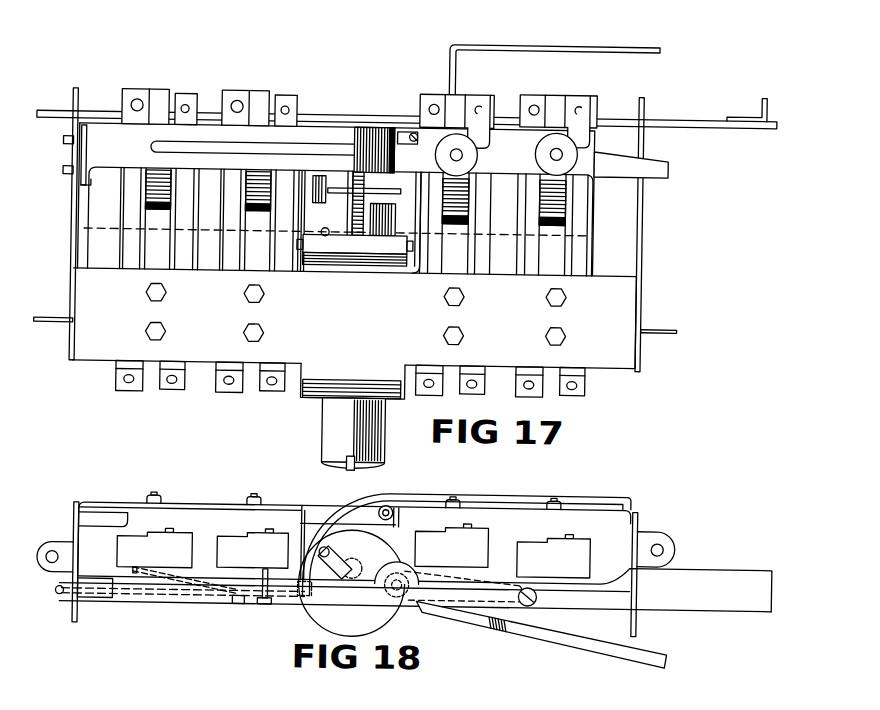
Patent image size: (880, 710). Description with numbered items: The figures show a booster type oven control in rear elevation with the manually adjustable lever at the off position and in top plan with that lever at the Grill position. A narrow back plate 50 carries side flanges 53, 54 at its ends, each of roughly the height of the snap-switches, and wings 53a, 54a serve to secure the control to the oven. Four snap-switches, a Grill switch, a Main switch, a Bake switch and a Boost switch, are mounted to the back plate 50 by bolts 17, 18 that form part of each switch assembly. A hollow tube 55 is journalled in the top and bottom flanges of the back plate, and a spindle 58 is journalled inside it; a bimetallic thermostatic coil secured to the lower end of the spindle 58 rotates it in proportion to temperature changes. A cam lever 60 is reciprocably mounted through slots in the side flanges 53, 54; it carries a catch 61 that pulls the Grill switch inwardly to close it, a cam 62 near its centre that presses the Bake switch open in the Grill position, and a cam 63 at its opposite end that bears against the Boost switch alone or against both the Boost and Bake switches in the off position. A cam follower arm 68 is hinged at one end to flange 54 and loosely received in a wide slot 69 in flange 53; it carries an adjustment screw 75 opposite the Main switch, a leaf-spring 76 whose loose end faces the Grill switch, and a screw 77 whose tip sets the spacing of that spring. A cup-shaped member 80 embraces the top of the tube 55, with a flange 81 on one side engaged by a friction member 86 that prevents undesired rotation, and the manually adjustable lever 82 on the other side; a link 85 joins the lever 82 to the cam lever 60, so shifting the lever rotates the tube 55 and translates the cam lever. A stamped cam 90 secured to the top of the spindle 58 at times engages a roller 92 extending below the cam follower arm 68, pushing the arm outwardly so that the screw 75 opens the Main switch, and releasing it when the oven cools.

In FIG. 17, the bolt 17 is at (147, 296).
In FIG. 17, the bolt 18 is at (147, 335).
In FIG. 17, the back plate 50 is at (622, 296).
In FIG. 18, the back plate 50 is at (197, 508).
In FIG. 17, the side flange 53 is at (645, 228).
In FIG. 18, the side flange 53 is at (634, 575).
In FIG. 17, the wing 53a is at (660, 324).
In FIG. 18, the wing 53a is at (62, 548).
In FIG. 17, the side flange 54 is at (72, 230).
In FIG. 17, the wing 54a is at (57, 322).
In FIG. 18, the wing 54a is at (657, 528).
In FIG. 17, the hollow tube 55 is at (330, 418).
In FIG. 17, the spindle 58 is at (350, 465).
In FIG. 17, the cam lever 60 is at (672, 116).
In FIG. 18, the cam lever 60 is at (120, 600).
In FIG. 18, the catch 61 is at (92, 526).
In FIG. 18, the cam 62 is at (376, 608).
In FIG. 18, the cam 63 is at (645, 571).
In FIG. 17, the cam follower arm 68 is at (307, 137).
In FIG. 18, the cam follower arm 68 is at (425, 492).
In FIG. 18, the slot 69 is at (57, 598).
In FIG. 18, the adjustment screw 75 is at (263, 609).
In FIG. 17, the leaf-spring 76 is at (498, 137).
In FIG. 18, the leaf-spring 76 is at (152, 576).
In FIG. 18, the screw 77 is at (238, 605).
In FIG. 17, the cup-shaped member 80 is at (393, 216).
In FIG. 18, the flange 81 is at (333, 523).
In FIG. 17, the manually adjustable lever 82 is at (548, 48).
In FIG. 18, the manually adjustable lever 82 is at (458, 612).
In FIG. 17, the link 85 is at (348, 127).
In FIG. 18, the link 85 is at (510, 606).
In FIG. 17, the friction member 86 is at (387, 246).
In FIG. 18, the friction member 86 is at (305, 511).
In FIG. 17, the cam 90 is at (388, 190).
In FIG. 18, the cam 90 is at (328, 612).
In FIG. 17, the roller 92 is at (313, 186).
In FIG. 18, the roller 92 is at (388, 506).